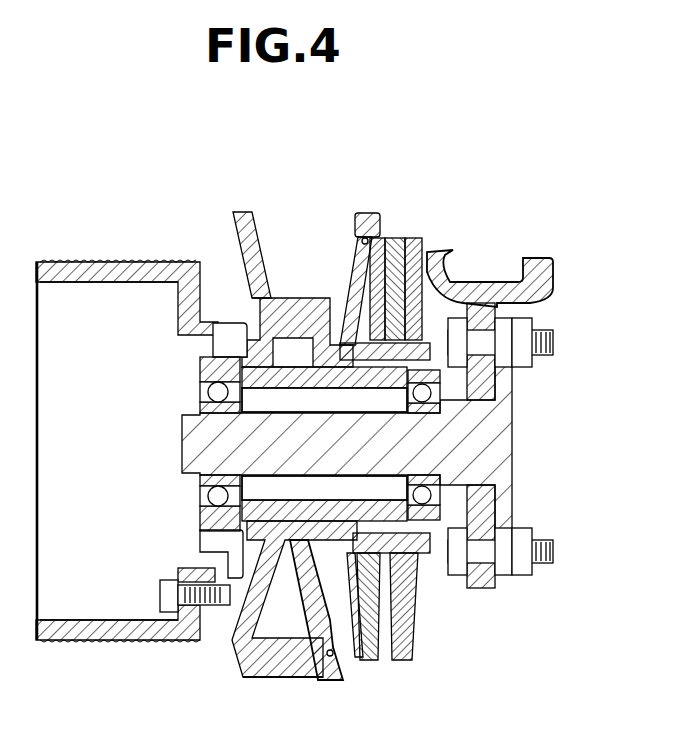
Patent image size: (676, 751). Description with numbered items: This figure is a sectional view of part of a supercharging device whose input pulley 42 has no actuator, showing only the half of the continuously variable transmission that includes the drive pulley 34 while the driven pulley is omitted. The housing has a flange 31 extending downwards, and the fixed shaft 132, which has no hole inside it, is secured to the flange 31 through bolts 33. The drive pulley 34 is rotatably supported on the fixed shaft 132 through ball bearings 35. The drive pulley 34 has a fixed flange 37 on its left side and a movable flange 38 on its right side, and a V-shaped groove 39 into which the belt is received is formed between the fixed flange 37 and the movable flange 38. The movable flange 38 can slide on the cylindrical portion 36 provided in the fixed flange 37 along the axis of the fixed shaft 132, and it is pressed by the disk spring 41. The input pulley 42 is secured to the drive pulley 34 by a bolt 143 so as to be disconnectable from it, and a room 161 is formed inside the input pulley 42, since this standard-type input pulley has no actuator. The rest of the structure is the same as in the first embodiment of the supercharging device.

The flange 31 is at (530, 307).
The bolts 33 is at (457, 553).
The drive pulley 34 is at (218, 670).
The ball bearings 35 is at (427, 303).
The cylindrical portion 36 is at (300, 380).
The fixed flange 37 is at (250, 260).
The movable flange 38 is at (345, 255).
The V-shaped groove 39 is at (258, 225).
The disk spring 41 is at (413, 633).
The input pulley 42 is at (78, 637).
The fixed shaft 132 is at (360, 463).
The bolt 143 is at (163, 596).
The room 161 is at (108, 463).